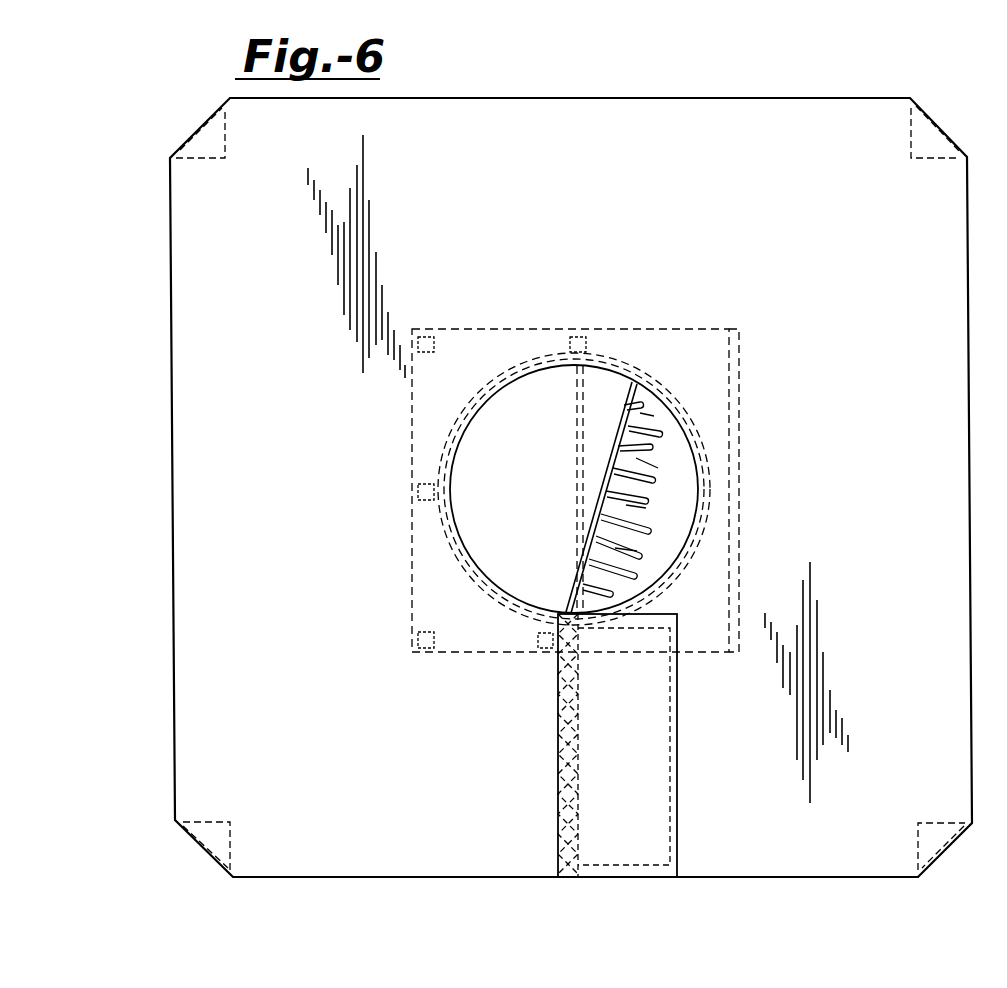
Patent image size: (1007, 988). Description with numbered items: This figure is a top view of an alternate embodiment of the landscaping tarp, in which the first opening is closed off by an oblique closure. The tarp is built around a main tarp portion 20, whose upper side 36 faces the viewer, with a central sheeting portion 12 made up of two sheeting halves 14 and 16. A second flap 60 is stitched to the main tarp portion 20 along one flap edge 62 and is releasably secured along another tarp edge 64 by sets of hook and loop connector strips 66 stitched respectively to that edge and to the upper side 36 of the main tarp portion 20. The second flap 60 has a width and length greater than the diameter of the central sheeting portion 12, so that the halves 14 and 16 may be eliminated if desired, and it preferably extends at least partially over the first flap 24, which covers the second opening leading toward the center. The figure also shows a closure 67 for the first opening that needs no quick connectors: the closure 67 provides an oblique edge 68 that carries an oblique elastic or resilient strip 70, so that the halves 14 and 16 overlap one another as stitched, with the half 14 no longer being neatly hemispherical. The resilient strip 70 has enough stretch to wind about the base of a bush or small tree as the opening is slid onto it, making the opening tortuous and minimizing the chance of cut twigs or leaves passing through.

The main tarp portion 20 is at (160, 450).
The upper side 36 is at (578, 212).
The tarp edge 64 is at (411, 417).
The flap edge 62 is at (741, 470).
The hook and loop connector strips 66 is at (425, 337).
The second flap 60 is at (673, 348).
The closure 67 is at (711, 376).
The sheeting section 14 is at (492, 548).
The central sheeting portion 12 is at (621, 355).
The oblique edge 68 is at (603, 448).
The resilient strip 70 is at (612, 480).
The sheeting section 16 is at (656, 547).
The flap 24 is at (677, 780).